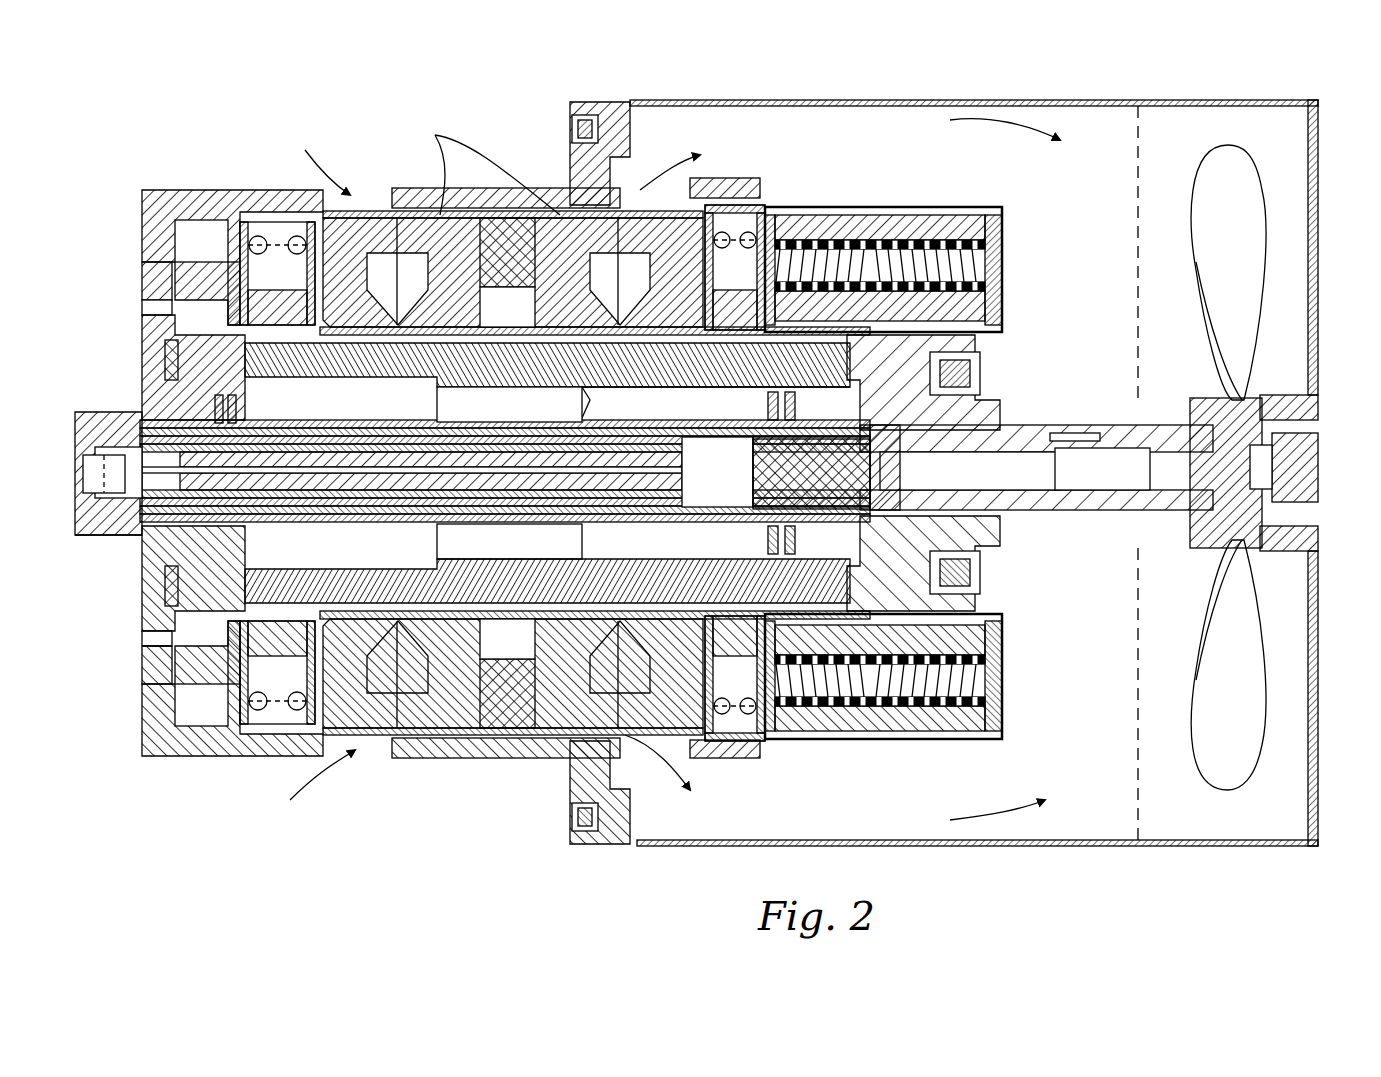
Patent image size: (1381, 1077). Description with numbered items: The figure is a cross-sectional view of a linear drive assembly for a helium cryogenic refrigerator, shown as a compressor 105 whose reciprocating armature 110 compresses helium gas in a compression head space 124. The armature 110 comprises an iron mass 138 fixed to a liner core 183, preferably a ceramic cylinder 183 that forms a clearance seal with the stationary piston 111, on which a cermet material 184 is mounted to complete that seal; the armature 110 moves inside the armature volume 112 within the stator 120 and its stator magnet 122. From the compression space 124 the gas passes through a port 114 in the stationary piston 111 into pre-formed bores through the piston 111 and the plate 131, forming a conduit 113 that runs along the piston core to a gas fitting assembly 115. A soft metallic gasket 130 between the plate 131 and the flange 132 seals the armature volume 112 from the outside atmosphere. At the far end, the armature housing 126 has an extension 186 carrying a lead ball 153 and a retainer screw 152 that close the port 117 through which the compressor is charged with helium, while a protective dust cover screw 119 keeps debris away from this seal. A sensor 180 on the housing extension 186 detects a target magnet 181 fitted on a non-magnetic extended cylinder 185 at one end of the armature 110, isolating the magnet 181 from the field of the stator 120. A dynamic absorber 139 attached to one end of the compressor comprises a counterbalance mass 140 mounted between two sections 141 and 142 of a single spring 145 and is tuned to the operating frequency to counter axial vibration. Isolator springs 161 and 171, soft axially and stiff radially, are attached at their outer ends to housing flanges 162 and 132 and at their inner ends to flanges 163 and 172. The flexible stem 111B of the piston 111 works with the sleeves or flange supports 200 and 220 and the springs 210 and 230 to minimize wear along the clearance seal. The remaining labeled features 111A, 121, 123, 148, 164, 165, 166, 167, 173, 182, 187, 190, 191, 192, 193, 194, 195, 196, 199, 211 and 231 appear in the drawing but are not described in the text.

The compressor 105 is at (482, 825).
The reciprocating armature 110 is at (640, 372).
The stationary piston 111 is at (360, 462).
The shaft lower portion 111A is at (410, 498).
The flexible stem 111B is at (160, 440).
The armature volume 112 is at (503, 469).
The conduit 113 is at (215, 482).
The port 114 is at (717, 472).
The gas fitting assembly 115 is at (80, 440).
The port 117 is at (1190, 460).
The protective dust cover screw 119 is at (1320, 462).
The stator 120 is at (420, 215).
The lower stator 121 is at (450, 760).
The stator magnet 122 is at (500, 188).
The pole pieces 123 is at (560, 735).
The compression head space 124 is at (781, 472).
The armature housing 126 is at (218, 640).
The soft metallic gasket 130 is at (142, 308).
The plate 131 is at (142, 272).
The housing flange 132 is at (142, 660).
The iron mass 138 is at (345, 372).
The dynamic absorber 139 is at (1002, 300).
The counterbalance mass 140 is at (880, 240).
The spring section 141 is at (790, 228).
The spring section 142 is at (985, 225).
The single spring 145 is at (1002, 640).
The spacer ring 148 is at (165, 358).
The retainer screw 152 is at (1290, 412).
The lead ball 153 is at (1195, 520).
The spring 161 is at (750, 205).
The housing flange 162 is at (800, 720).
The flange 163 is at (700, 740).
The retainer plate 164 is at (755, 758).
The lower coil assembly 165 is at (1002, 680).
The lower bolt 166 is at (980, 578).
The bolt 167 is at (980, 370).
The spring 171 is at (238, 250).
The flange 172 is at (305, 272).
The housing cavity 173 is at (222, 292).
The sensor 180 is at (1075, 432).
The target magnet 181 is at (1050, 498).
The cavity 182 is at (509, 473).
The liner core 183 is at (615, 540).
The cermet material 184 is at (345, 512).
The non-magnetic extended cylinder 185 is at (960, 430).
The armature housing extension 186 is at (975, 400).
The notch 187 is at (610, 403).
The motor section 190 is at (485, 165).
The fan housing 191 is at (1318, 170).
The chamber 192 is at (1089, 473).
The fan blade 193 is at (1228, 467).
The end plate 194 is at (570, 108).
The bolt 195 is at (572, 128).
The lower housing 196 is at (180, 758).
The lower housing flange 199 is at (1268, 548).
The sleeve 200 is at (120, 535).
The spring 210 is at (150, 570).
The seal ring 211 is at (150, 580).
The sleeve 220 is at (940, 498).
The spring 230 is at (795, 556).
The upper bolts 231 is at (795, 390).